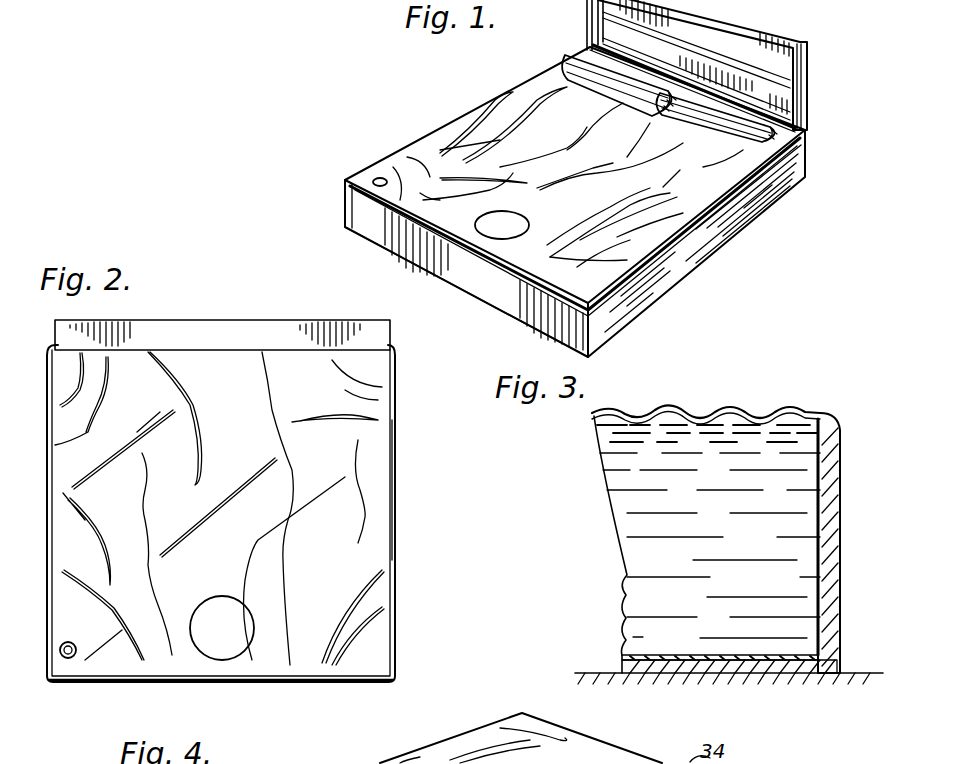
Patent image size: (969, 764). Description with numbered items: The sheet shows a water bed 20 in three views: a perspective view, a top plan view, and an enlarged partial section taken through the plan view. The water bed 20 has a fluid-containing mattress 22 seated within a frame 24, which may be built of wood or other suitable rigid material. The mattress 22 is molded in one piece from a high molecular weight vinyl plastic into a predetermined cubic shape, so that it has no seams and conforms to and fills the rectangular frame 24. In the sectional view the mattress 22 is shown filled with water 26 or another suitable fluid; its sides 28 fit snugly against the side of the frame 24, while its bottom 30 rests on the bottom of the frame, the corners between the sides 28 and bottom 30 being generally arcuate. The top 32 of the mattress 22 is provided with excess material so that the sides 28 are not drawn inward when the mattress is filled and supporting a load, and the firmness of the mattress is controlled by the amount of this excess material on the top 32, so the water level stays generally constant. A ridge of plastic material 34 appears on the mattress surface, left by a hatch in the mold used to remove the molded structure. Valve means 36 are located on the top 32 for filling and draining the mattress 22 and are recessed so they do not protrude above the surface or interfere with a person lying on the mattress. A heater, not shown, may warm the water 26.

In FIG. 1, the water bed 20 is at (430, 118).
In FIG. 2, the water bed 20 is at (405, 418).
In FIG. 3, the water bed 20 is at (847, 614).
In FIG. 1, the fluid-containing mattress 22 is at (432, 148).
In FIG. 3, the fluid-containing mattress 22 is at (768, 386).
In FIG. 1, the frame 24 is at (362, 204).
In FIG. 2, the frame 24 is at (397, 490).
In FIG. 3, the frame 24 is at (843, 552).
In FIG. 3, the water 26 is at (632, 509).
In FIG. 3, the sides 28 is at (843, 492).
In FIG. 3, the bottom 30 is at (697, 662).
In FIG. 3, the top 32 is at (690, 413).
In FIG. 1, the ridge of plastic material 34 is at (487, 231).
In FIG. 2, the ridge of plastic material 34 is at (217, 642).
In FIG. 1, the valve means 36 is at (372, 178).
In FIG. 2, the valve means 36 is at (72, 660).